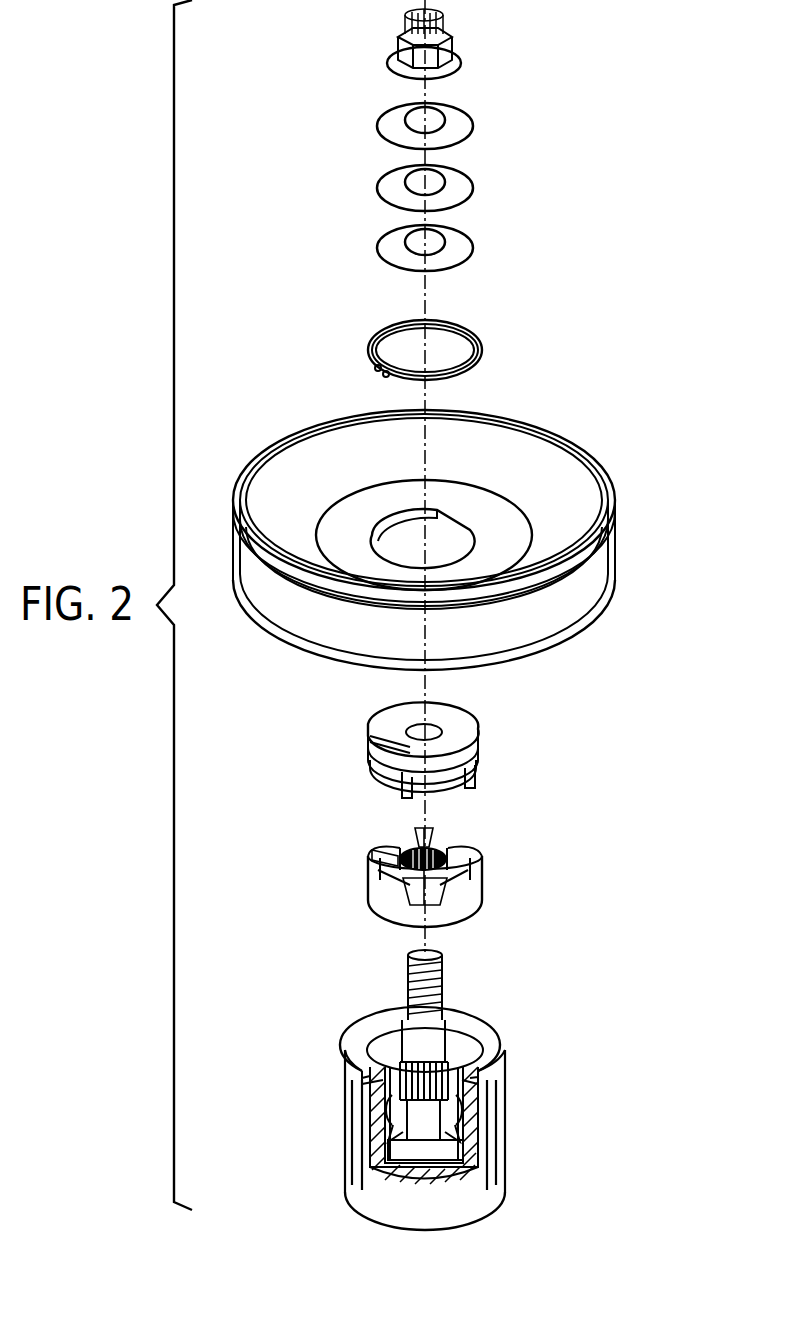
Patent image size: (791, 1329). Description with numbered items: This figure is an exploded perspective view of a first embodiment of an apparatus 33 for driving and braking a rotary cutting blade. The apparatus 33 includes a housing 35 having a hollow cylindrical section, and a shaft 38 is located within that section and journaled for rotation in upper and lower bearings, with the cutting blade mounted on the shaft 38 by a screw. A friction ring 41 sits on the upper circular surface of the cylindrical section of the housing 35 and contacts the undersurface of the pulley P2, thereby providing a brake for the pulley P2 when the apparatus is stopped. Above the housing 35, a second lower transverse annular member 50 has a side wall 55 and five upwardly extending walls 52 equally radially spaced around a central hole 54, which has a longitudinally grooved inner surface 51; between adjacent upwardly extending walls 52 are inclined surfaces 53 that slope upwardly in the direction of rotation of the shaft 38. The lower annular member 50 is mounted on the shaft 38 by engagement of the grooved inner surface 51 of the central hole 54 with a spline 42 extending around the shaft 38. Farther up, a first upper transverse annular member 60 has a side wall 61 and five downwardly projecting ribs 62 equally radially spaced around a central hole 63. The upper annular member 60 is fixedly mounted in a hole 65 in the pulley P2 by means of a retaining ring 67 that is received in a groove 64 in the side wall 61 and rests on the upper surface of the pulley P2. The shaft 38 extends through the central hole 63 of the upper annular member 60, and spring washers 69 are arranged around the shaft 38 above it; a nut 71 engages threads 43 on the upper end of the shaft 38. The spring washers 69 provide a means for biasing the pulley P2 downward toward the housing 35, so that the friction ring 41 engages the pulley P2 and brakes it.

The apparatus 33 is at (262, 316).
The housing 35 is at (459, 1108).
The shaft 38 is at (452, 1046).
The friction ring 41 is at (492, 1047).
The spline 42 is at (447, 1035).
The threads 43 is at (398, 983).
The second lower transverse annular member 50 is at (457, 886).
The longitudinally grooved inner surface 51 is at (437, 848).
The upwardly extending walls 52 is at (476, 846).
The inclined surfaces 53 is at (415, 896).
The central hole 54 is at (400, 850).
The side wall 55 is at (464, 902).
The first upper transverse annular member 60 is at (494, 750).
The side wall 61 is at (476, 757).
The downwardly projecting ribs 62 is at (406, 790).
The central hole 63 is at (432, 728).
The groove 64 is at (486, 735).
The hole 65 is at (450, 535).
The retaining ring 67 is at (490, 341).
The spring washers 69 is at (492, 122).
The nut 71 is at (463, 40).
The pulley P2 is at (598, 470).